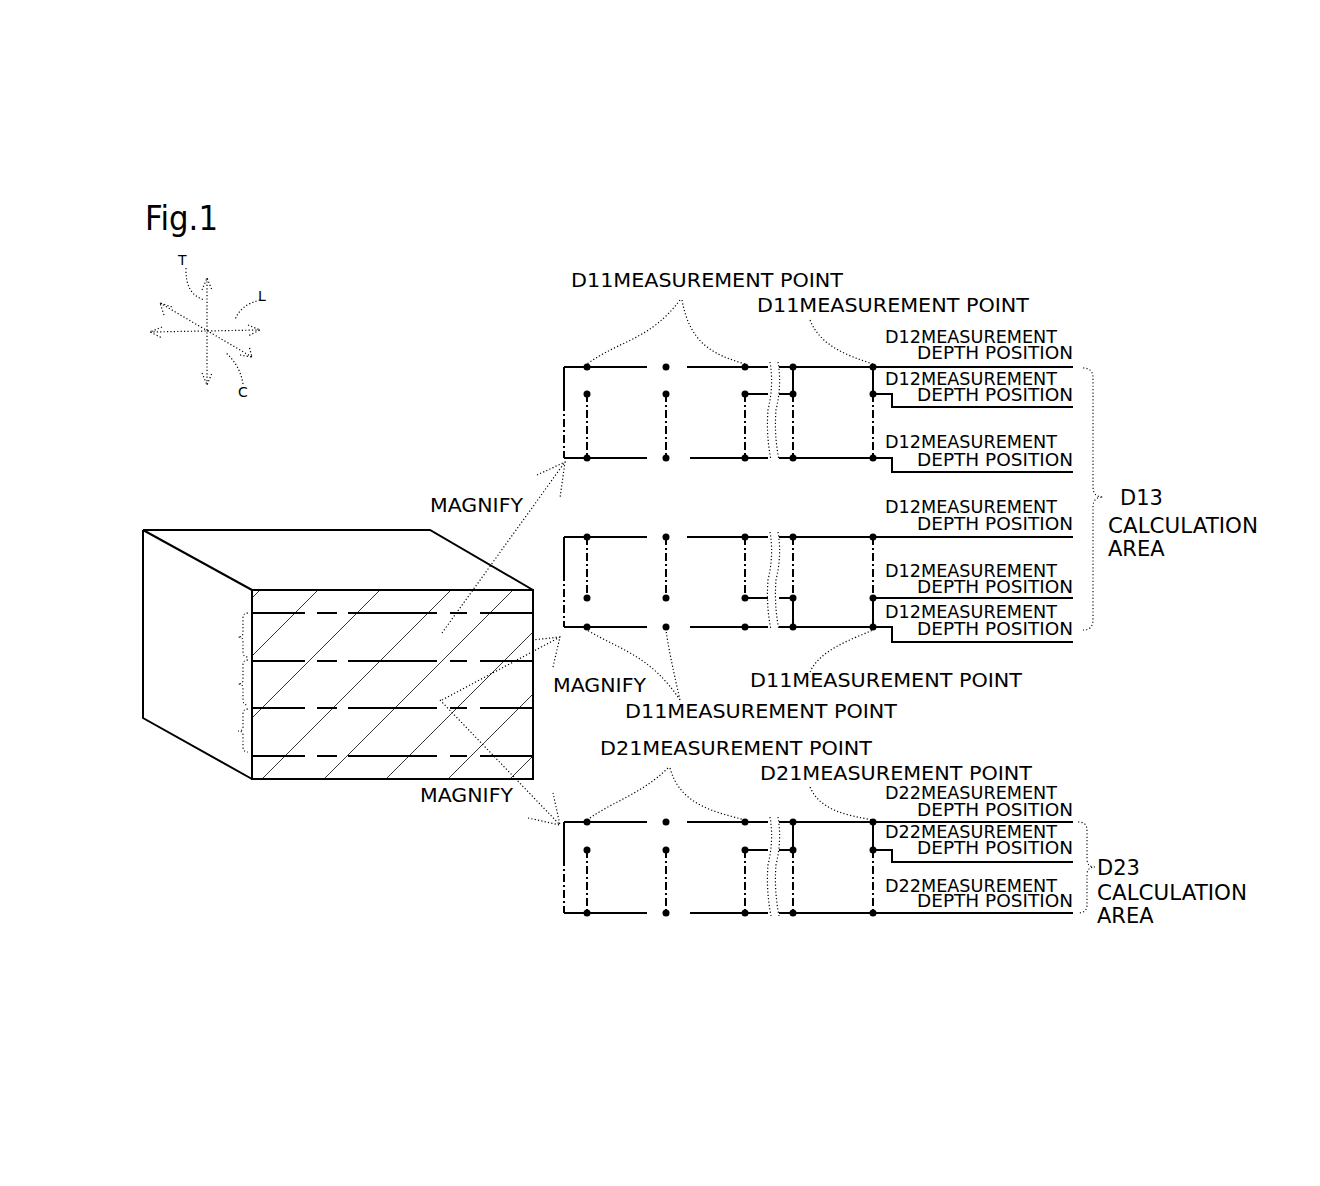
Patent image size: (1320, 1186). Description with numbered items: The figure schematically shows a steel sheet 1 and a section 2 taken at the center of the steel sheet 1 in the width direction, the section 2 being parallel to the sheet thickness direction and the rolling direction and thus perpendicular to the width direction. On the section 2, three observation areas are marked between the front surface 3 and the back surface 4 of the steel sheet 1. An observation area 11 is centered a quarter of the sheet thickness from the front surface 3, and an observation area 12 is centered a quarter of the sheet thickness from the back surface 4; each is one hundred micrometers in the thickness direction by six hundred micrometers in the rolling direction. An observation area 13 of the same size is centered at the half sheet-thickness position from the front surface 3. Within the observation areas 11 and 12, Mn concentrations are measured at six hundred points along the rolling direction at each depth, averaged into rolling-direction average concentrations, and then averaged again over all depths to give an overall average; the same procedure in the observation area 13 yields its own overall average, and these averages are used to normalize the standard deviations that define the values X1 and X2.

The steel sheet 1 is at (338, 620).
The section 2 is at (303, 600).
The front surface 3 is at (208, 553).
The back surface 4 is at (227, 748).
The observation area 11 is at (579, 335).
The observation area 12 is at (617, 500).
The observation area 13 is at (565, 822).